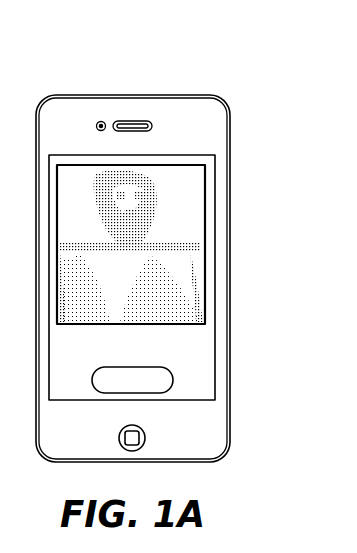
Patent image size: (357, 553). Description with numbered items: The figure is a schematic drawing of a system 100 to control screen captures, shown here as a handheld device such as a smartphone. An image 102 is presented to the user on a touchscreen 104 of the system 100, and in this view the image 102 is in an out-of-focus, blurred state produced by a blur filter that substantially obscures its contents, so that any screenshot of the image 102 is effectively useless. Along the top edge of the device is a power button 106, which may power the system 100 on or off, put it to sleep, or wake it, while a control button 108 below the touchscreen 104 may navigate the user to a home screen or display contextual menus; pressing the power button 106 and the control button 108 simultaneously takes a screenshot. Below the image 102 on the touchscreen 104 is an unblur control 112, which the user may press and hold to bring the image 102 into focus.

The system 100 is at (249, 51).
The image 102 is at (205, 203).
The touchscreen 104 is at (215, 262).
The power button 106 is at (177, 94).
The control button 108 is at (142, 428).
The unblur control 112 is at (120, 366).